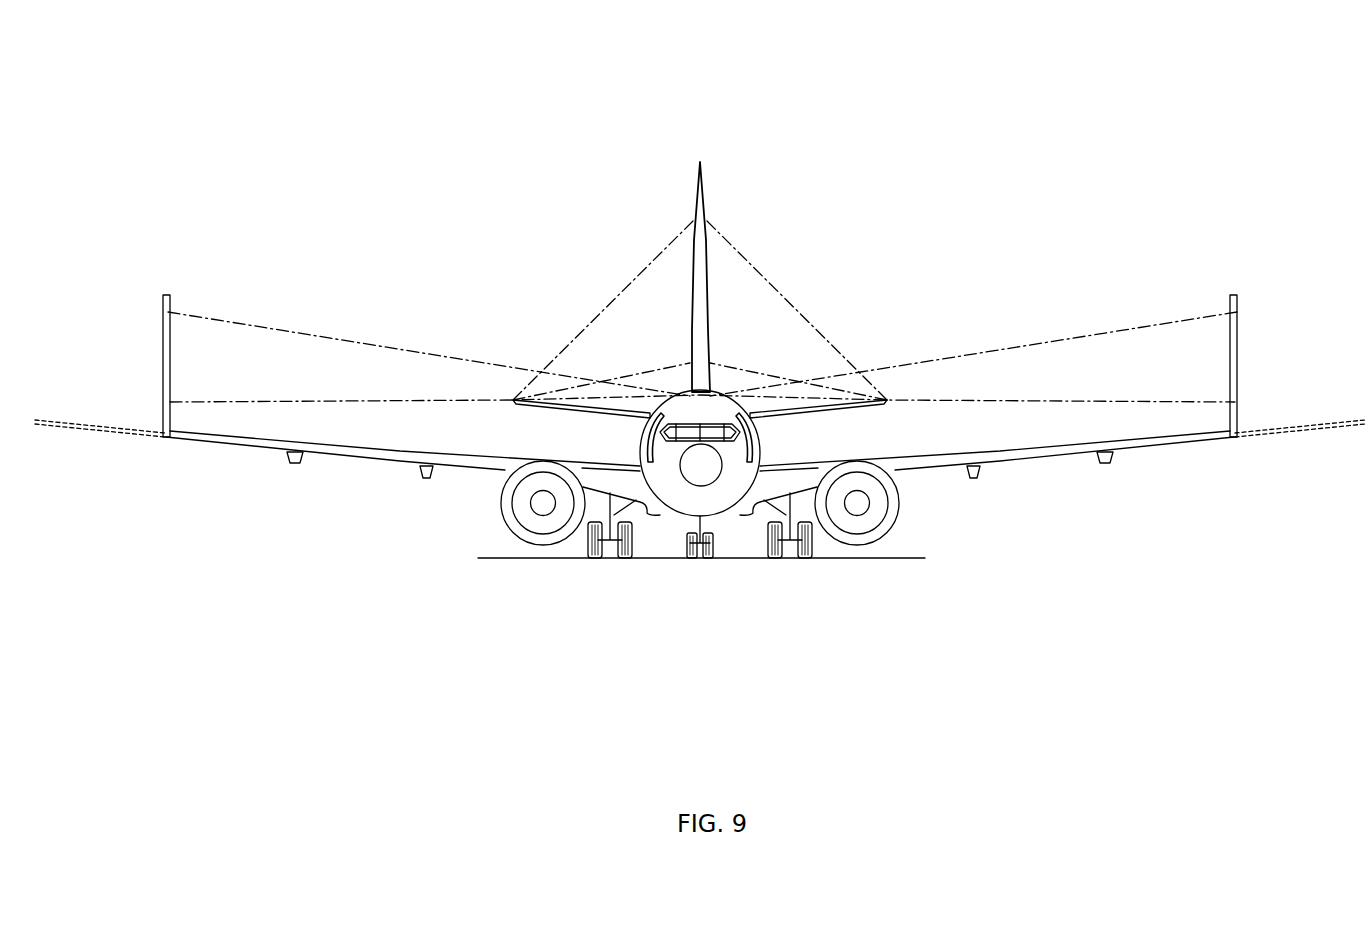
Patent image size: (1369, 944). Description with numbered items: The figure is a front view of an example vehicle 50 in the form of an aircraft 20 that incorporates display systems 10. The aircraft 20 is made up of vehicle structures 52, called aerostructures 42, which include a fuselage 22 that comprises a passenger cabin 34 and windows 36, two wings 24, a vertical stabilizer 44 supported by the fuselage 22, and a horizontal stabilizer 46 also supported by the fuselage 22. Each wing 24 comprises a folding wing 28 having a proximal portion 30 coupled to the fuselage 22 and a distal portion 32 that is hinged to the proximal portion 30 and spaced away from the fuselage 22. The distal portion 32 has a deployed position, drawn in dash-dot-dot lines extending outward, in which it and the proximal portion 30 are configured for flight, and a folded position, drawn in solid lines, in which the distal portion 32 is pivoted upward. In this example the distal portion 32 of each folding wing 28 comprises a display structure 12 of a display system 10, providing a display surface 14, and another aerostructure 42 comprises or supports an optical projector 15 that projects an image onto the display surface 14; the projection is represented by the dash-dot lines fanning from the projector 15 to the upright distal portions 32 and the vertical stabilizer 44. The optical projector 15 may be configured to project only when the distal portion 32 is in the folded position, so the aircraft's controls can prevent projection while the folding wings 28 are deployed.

The display system 10 is at (592, 281).
The display structure 12 is at (172, 340).
The display surface 14 is at (171, 376).
The optical projector 15 is at (515, 392).
The aircraft 20 is at (920, 112).
The fuselage 22 is at (662, 503).
The wing 24 is at (368, 494).
The folding wing 28 is at (351, 463).
The proximal portion 30 is at (468, 472).
The distal portion 32 is at (163, 388).
The passenger cabin 34 is at (712, 383).
The windows 36 is at (686, 394).
The aerostructures 42 is at (853, 311).
The vertical stabilizer 44 is at (707, 184).
The horizontal stabilizer 46 is at (582, 416).
The vehicle 50 is at (998, 135).
The vehicle structures 52 is at (895, 237).